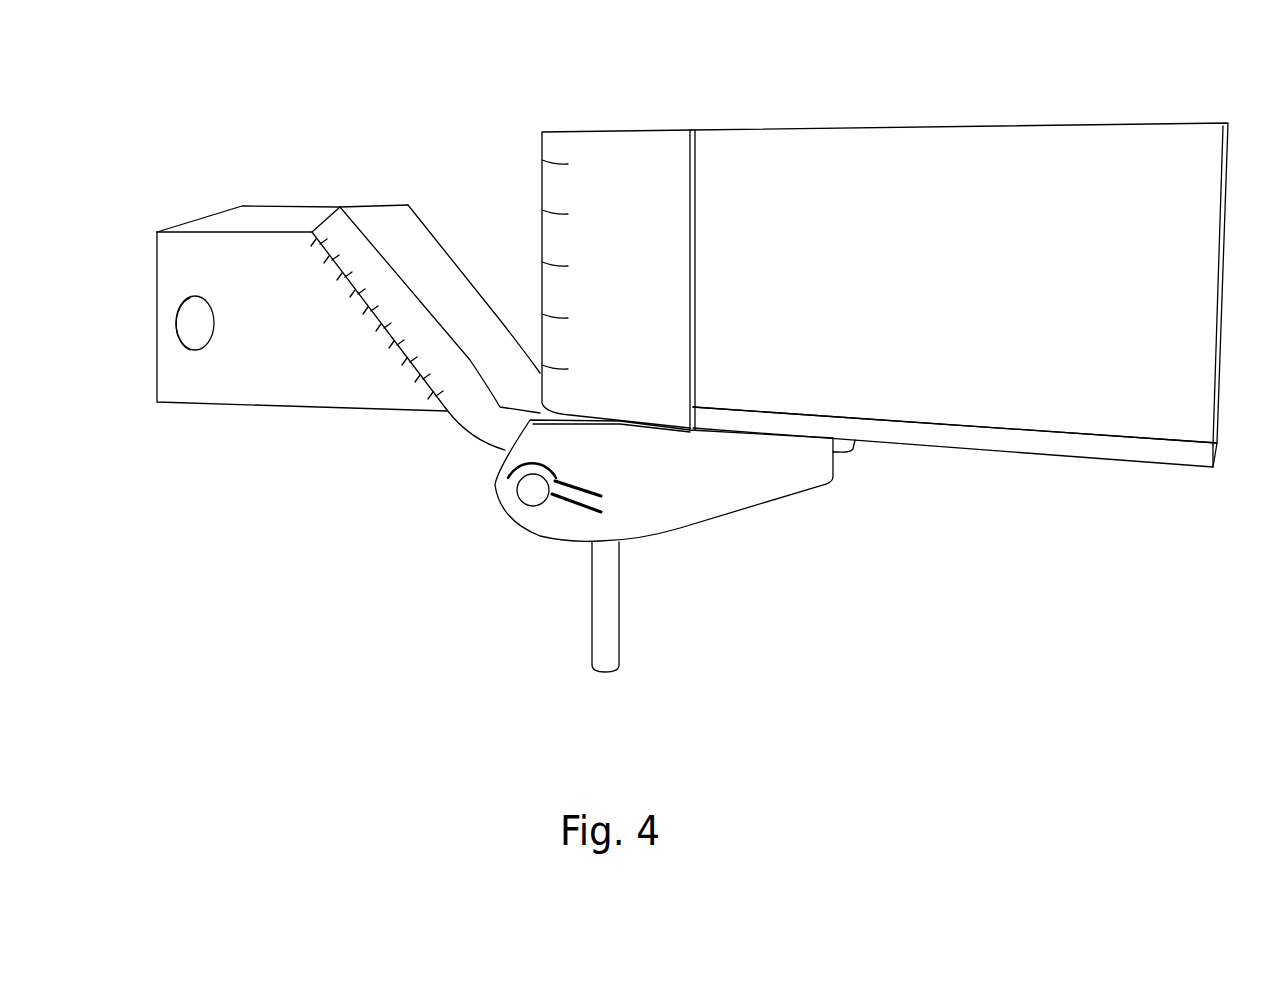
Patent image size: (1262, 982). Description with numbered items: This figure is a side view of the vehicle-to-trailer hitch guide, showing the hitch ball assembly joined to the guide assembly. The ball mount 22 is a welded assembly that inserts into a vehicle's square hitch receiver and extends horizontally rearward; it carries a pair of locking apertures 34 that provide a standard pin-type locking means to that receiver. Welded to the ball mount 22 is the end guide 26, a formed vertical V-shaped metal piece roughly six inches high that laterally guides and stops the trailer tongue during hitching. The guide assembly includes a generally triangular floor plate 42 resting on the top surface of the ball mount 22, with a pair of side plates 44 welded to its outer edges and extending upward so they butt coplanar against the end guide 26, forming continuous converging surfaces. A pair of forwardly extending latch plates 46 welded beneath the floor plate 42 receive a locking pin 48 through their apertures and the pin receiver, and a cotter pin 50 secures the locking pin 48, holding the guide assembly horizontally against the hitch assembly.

The ball mount 22 is at (308, 372).
The locking apertures 34 is at (184, 353).
The end guide 26 is at (540, 188).
The side plates 44 is at (995, 175).
The floor plate 42 is at (1055, 450).
The latch plates 46 is at (717, 500).
The locking pin 48 is at (527, 497).
The cotter pin 50 is at (500, 477).